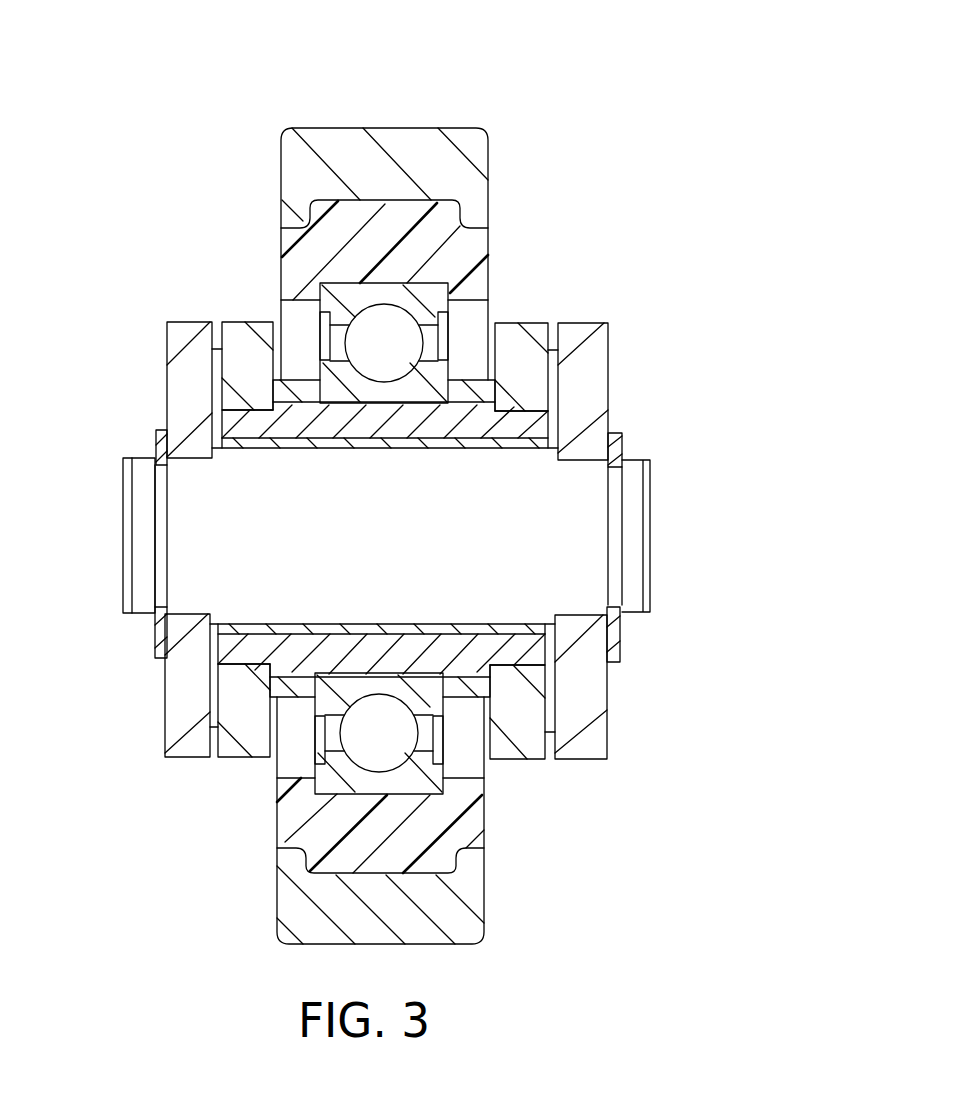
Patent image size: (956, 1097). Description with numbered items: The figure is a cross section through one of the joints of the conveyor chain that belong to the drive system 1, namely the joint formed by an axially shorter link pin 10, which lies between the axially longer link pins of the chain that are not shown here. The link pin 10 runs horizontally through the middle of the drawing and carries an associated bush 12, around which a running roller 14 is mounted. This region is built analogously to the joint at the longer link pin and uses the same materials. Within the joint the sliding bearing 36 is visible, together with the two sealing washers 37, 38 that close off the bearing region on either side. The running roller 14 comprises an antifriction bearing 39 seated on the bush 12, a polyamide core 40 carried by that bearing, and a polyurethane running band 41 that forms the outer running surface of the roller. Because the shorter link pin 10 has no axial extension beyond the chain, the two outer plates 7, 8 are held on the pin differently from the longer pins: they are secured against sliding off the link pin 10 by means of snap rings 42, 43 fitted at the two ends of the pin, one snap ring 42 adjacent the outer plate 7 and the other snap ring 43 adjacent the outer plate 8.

The drive system 1 is at (382, 524).
The outer plate 7 is at (176, 337).
The outer plate 8 is at (598, 345).
The axially shorter link pin 10 is at (500, 527).
The bush 12 is at (304, 440).
The running roller 14 is at (433, 506).
The sliding bearing 36 is at (422, 624).
The sealing washer 37 is at (210, 689).
The sealing washer 38 is at (555, 697).
The antifriction bearing 39 is at (302, 322).
The polyamide core 40 is at (470, 815).
The polyurethane running band 41 is at (465, 912).
The snap ring 42 is at (157, 440).
The snap ring 43 is at (618, 447).